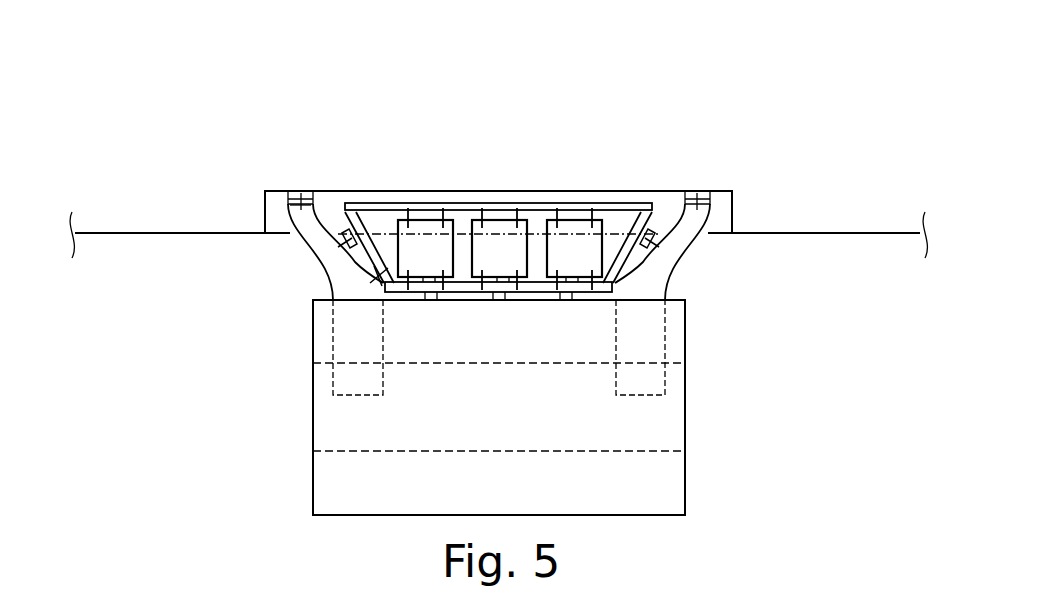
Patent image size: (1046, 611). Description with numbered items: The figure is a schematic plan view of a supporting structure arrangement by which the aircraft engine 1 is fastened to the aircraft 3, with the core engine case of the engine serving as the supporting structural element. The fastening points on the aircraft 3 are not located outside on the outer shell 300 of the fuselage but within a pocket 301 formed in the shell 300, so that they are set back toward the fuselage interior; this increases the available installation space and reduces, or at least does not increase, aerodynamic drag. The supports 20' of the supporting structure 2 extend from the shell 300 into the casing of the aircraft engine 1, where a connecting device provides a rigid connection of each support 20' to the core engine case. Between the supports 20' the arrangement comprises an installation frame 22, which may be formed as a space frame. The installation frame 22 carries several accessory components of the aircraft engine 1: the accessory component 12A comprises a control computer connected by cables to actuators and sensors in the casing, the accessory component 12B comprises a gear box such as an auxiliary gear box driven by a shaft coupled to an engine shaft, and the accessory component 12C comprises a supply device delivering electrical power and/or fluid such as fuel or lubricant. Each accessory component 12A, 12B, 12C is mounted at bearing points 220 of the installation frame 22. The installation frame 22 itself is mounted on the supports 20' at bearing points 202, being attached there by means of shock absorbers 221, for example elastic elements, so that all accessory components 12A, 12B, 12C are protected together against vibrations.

The aircraft engine 1 is at (287, 418).
The supporting structure 2 is at (272, 269).
The aircraft 3 is at (157, 249).
The accessory component 12A is at (422, 205).
The accessory component 12B is at (505, 205).
The accessory component 12C is at (575, 205).
The support 20' is at (501, 268).
The installation frame 22 is at (368, 205).
The bearing point 202 is at (378, 276).
The bearing point 220 is at (452, 207).
The shock absorber 221 is at (370, 274).
The outer shell 300 is at (858, 236).
The pocket 301 is at (729, 236).